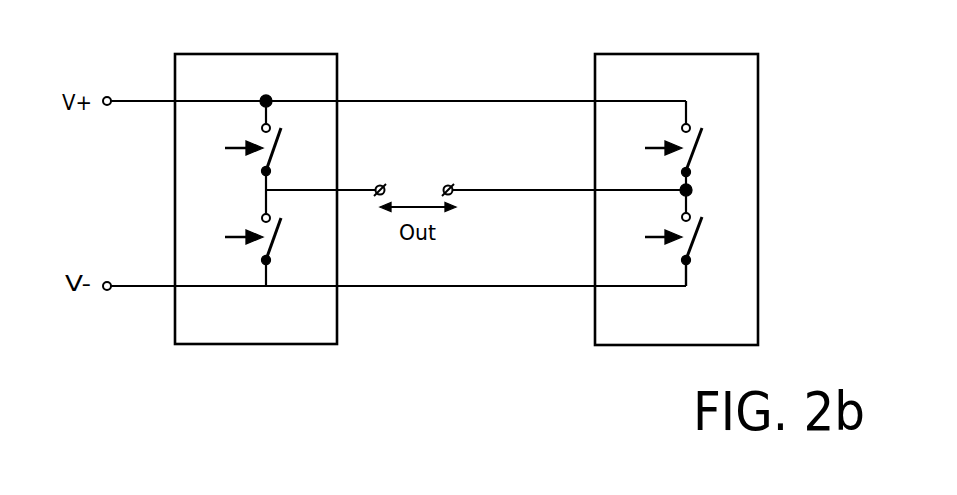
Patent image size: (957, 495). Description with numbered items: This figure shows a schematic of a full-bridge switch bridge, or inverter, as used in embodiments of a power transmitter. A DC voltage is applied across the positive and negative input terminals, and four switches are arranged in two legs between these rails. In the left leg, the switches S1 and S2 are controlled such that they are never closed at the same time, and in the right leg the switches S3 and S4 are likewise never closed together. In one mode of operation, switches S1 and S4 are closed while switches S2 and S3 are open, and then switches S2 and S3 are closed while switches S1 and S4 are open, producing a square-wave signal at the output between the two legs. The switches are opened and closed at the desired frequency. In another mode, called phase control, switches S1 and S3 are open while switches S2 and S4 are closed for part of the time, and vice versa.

The switch S1 is at (277, 148).
The switch S2 is at (278, 233).
The switch S3 is at (700, 146).
The switch S4 is at (700, 232).